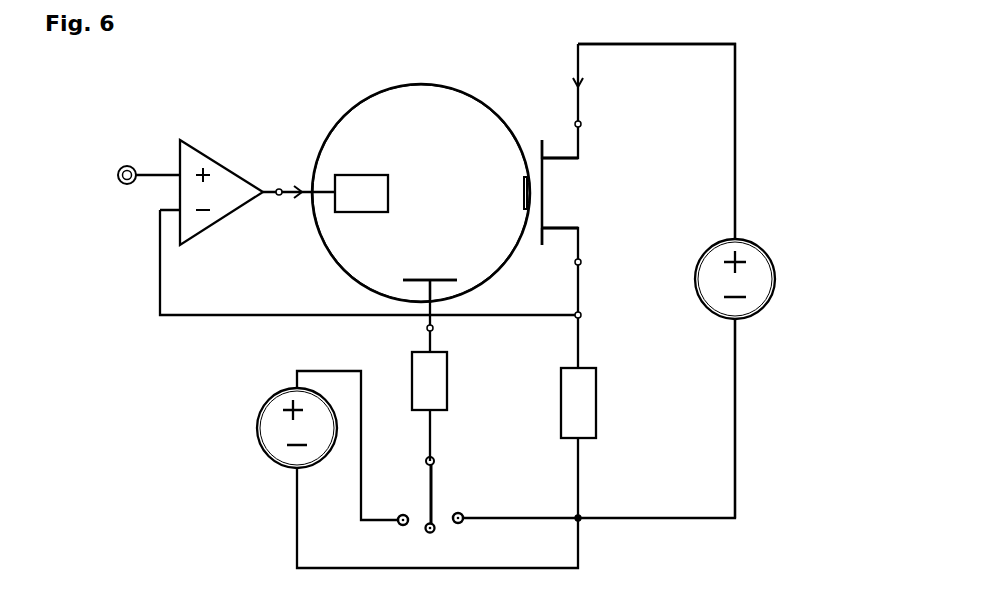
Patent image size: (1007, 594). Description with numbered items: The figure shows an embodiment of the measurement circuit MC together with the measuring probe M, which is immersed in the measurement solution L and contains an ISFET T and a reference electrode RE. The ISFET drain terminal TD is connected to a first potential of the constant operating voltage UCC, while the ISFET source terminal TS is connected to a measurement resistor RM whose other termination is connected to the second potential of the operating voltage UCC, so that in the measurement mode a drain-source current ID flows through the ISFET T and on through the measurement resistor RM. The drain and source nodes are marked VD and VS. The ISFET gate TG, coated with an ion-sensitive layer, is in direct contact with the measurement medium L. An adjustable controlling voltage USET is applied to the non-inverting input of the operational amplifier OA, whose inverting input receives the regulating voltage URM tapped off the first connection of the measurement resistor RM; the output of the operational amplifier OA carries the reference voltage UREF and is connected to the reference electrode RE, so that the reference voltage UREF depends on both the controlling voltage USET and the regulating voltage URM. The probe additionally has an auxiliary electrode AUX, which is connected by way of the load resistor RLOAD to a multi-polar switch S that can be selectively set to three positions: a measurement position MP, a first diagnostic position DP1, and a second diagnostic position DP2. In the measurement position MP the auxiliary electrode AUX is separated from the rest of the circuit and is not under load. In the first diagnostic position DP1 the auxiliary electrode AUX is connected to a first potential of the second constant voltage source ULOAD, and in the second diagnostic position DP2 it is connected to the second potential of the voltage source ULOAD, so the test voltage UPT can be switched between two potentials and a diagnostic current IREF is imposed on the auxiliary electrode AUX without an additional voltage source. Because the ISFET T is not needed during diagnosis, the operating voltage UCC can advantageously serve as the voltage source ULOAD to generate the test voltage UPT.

The measuring probe M is at (330, 104).
The measurement circuit MC is at (773, 102).
The measurement solution L is at (421, 193).
The reference electrode RE is at (361, 182).
The ISFET gate TG is at (511, 193).
The ISFET T is at (604, 192).
The ISFET drain terminal TD is at (560, 144).
The ISFET source terminal TS is at (560, 244).
The drain voltage node VD is at (595, 126).
The source voltage node VS is at (593, 263).
The drain-source current ID is at (591, 81).
The operational amplifier OA is at (221, 196).
The controlling voltage USET is at (124, 178).
The reference voltage UREF is at (280, 175).
The diagnostic current IREF is at (282, 206).
The auxiliary electrode AUX is at (430, 281).
The test voltage UPT is at (407, 335).
The regulating voltage URM is at (599, 322).
The load resistor RLOAD is at (459, 381).
The measurement resistor RM is at (596, 403).
The multi-polar switch S is at (437, 490).
The measurement position MP is at (430, 544).
The first diagnostic position DP1 is at (394, 508).
The second diagnostic position DP2 is at (474, 506).
The second constant voltage source ULOAD is at (263, 428).
The operating voltage UCC is at (758, 279).